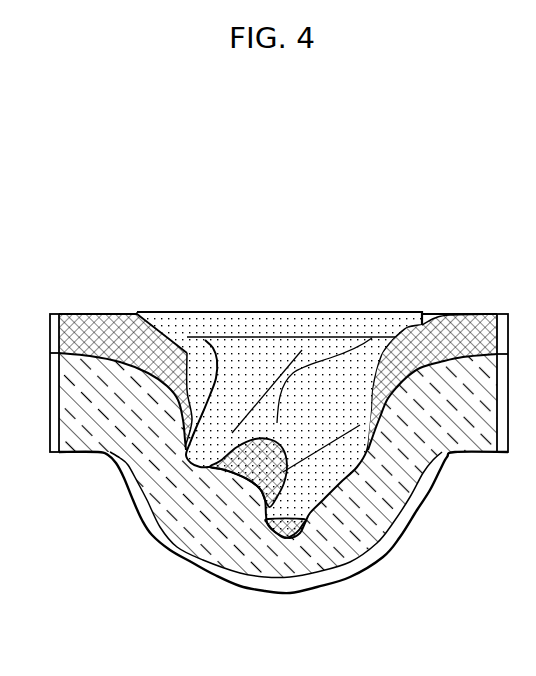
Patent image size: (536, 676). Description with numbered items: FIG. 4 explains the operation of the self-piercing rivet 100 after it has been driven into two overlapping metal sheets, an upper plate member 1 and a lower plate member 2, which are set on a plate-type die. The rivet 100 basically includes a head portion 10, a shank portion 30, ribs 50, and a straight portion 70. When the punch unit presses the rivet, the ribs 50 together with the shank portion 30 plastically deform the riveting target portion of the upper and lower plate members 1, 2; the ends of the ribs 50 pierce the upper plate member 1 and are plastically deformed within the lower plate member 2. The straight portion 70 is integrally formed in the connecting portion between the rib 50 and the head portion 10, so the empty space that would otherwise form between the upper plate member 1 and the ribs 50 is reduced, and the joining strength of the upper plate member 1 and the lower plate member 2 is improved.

The self-piercing rivet 100 is at (291, 300).
The upper plate member 1 is at (88, 313).
The lower plate member 2 is at (90, 434).
The head portion 10 is at (246, 320).
The shank portion 30 is at (247, 478).
The ribs 50 is at (178, 382).
The straight portion 70 is at (205, 364).